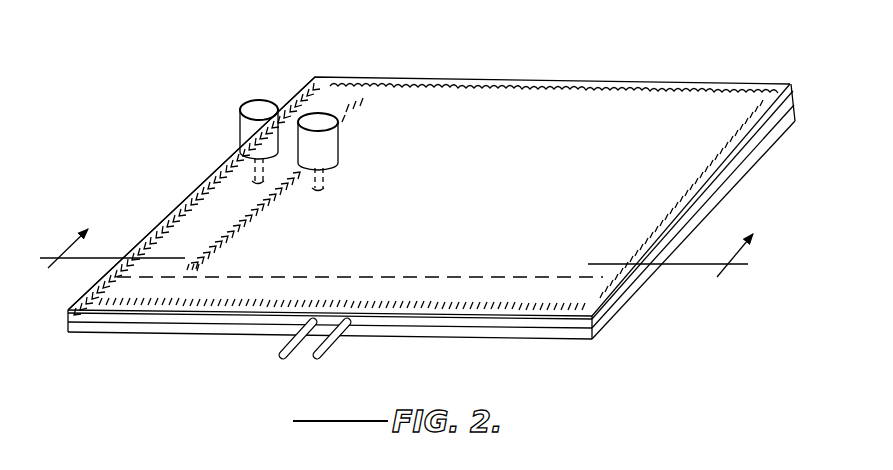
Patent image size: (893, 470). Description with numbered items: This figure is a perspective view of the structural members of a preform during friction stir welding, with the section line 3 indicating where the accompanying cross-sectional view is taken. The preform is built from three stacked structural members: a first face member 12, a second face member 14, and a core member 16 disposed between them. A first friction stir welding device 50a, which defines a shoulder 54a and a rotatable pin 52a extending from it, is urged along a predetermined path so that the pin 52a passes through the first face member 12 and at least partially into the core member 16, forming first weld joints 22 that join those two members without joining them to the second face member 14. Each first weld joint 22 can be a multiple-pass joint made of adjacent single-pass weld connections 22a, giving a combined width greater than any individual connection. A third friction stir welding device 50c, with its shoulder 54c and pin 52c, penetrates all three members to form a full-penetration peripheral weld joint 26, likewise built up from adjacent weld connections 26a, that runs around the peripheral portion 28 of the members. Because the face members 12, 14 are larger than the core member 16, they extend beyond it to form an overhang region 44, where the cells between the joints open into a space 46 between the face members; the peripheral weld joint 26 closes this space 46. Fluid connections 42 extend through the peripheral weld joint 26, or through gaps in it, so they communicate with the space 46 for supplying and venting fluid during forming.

The first face member 12 is at (78, 316).
The second face member 14 is at (132, 333).
The core member 16 is at (738, 172).
The first weld joints 22 is at (358, 122).
The single-pass weld connections 22a is at (252, 228).
The peripheral weld joint 26 is at (230, 155).
The single-pass weld connections 26a is at (158, 238).
The peripheral portion 28 is at (283, 102).
The fluid connections 42 is at (280, 357).
The overhang region 44 is at (413, 277).
The space 46 is at (474, 290).
The first friction stir welding device 50a is at (327, 110).
The third friction stir welding device 50c is at (257, 99).
The pin 52a is at (320, 183).
The pin 52c is at (247, 181).
The shoulder 54a is at (322, 170).
The shoulder 54c is at (269, 155).
The section line 3- 3 is at (389, 270).